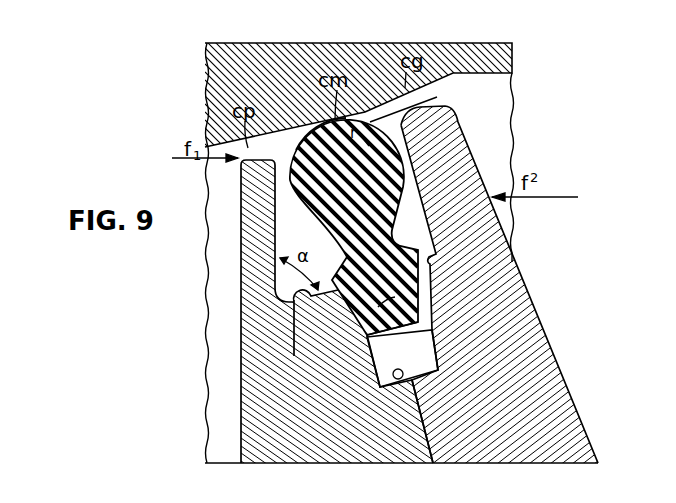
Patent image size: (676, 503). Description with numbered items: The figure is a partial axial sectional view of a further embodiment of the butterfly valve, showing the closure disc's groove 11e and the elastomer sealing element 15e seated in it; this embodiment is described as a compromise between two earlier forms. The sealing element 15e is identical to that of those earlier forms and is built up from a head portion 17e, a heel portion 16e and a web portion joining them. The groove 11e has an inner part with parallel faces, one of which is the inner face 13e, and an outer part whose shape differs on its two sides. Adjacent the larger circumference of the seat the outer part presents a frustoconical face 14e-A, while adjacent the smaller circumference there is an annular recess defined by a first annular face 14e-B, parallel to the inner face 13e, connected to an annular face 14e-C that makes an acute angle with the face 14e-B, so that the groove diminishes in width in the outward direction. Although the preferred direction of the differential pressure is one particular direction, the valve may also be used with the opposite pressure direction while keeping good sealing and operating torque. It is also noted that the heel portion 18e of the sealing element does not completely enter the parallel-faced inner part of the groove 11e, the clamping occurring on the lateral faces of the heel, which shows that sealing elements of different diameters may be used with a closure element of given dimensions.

The groove 11e is at (363, 120).
The inner face of the groove 13e is at (398, 380).
The frustoconical face 14e-A is at (418, 176).
The first annular face 14e-B is at (337, 264).
The annular face 14e-C is at (277, 233).
The sealing element 15e is at (322, 148).
The heel portion 16e is at (374, 347).
The head portion 17e is at (420, 102).
The heel portion of the sealing element 18e is at (352, 331).